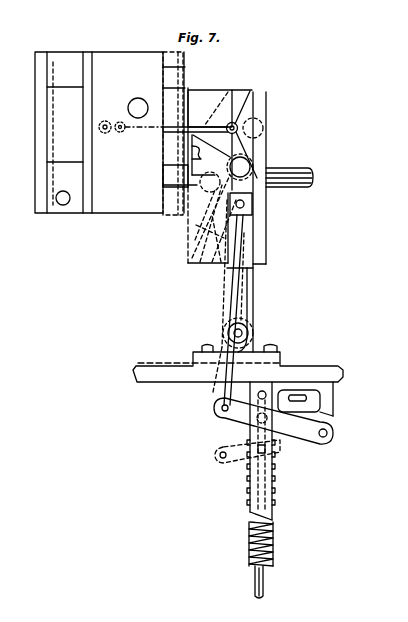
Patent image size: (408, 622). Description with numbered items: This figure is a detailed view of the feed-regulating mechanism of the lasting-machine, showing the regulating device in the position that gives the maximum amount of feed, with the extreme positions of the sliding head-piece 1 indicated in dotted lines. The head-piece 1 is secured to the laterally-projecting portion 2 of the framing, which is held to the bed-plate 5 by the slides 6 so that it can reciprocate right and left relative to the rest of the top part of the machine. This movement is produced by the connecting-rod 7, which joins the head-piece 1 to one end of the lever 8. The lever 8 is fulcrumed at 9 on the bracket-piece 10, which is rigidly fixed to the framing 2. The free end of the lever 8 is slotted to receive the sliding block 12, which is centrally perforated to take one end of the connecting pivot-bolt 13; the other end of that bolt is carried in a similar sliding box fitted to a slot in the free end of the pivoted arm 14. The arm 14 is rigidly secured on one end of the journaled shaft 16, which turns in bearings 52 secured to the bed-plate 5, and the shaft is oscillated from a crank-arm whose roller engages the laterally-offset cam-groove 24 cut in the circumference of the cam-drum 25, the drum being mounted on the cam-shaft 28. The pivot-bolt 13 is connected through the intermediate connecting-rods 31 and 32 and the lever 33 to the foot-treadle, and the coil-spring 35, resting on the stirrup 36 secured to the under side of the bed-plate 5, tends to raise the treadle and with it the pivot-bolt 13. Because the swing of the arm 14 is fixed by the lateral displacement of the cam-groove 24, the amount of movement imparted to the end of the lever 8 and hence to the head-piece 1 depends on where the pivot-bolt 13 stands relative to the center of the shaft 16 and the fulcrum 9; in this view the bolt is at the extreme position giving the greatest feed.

The head-piece 1 is at (128, 53).
The laterally-projecting portion of the framing 2 is at (187, 93).
The bed-plate 5 is at (315, 366).
The slides 6 is at (184, 67).
The connecting-rod 7 is at (202, 127).
The lever 8 is at (252, 147).
The fulcrum 9 is at (255, 165).
The bracket-piece 10 is at (211, 163).
The sliding block 12 is at (253, 209).
The connecting pivot-bolt 13 is at (245, 203).
The pivoted arm 14 is at (255, 297).
The journaled shaft 16 is at (246, 333).
The cam-groove 24 is at (245, 122).
The cam-drum 25 is at (205, 265).
The cam-shaft 28 is at (293, 168).
The connecting-rod 31 is at (223, 393).
The connecting-rod 32 is at (264, 584).
The lever 33 is at (273, 430).
The coil-spring 35 is at (274, 560).
The stirrup 36 is at (274, 478).
The bearings 52 is at (280, 352).